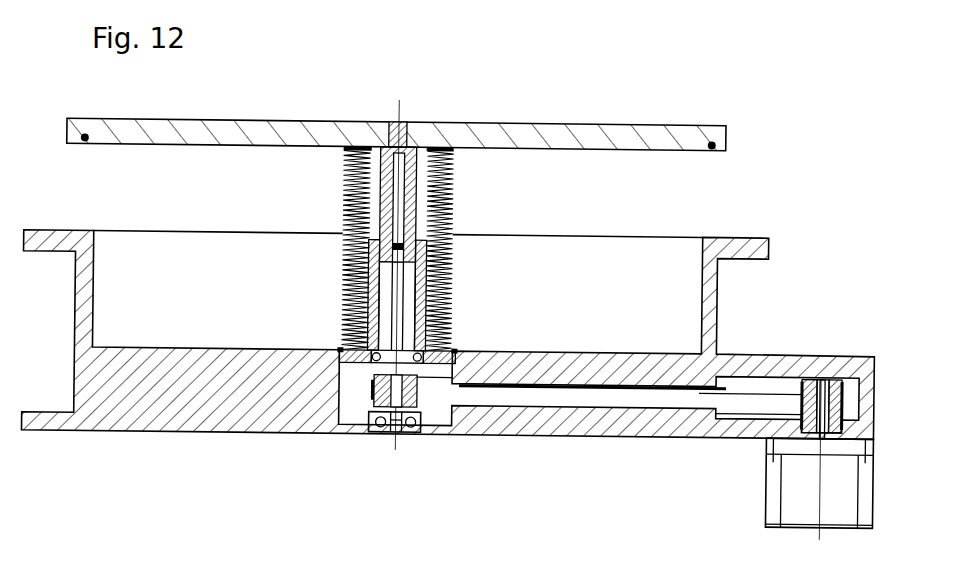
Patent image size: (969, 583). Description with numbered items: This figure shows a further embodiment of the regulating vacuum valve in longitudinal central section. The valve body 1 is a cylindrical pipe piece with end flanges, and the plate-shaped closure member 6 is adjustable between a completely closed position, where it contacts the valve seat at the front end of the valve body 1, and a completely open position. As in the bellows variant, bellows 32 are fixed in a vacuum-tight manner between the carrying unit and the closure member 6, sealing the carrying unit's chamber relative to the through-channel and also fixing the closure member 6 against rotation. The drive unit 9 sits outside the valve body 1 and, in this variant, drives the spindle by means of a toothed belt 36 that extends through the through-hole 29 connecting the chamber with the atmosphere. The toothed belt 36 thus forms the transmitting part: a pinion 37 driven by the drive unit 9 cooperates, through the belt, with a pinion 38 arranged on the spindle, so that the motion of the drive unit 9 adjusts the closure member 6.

The valve body 1 is at (80, 311).
The closure member 6 is at (577, 132).
The drive unit 9 is at (803, 475).
The through-hole 29 is at (645, 383).
The bellows 32 is at (445, 207).
The toothed belt 36 is at (495, 392).
The pinion 37 is at (839, 388).
The pinion 38 is at (370, 407).